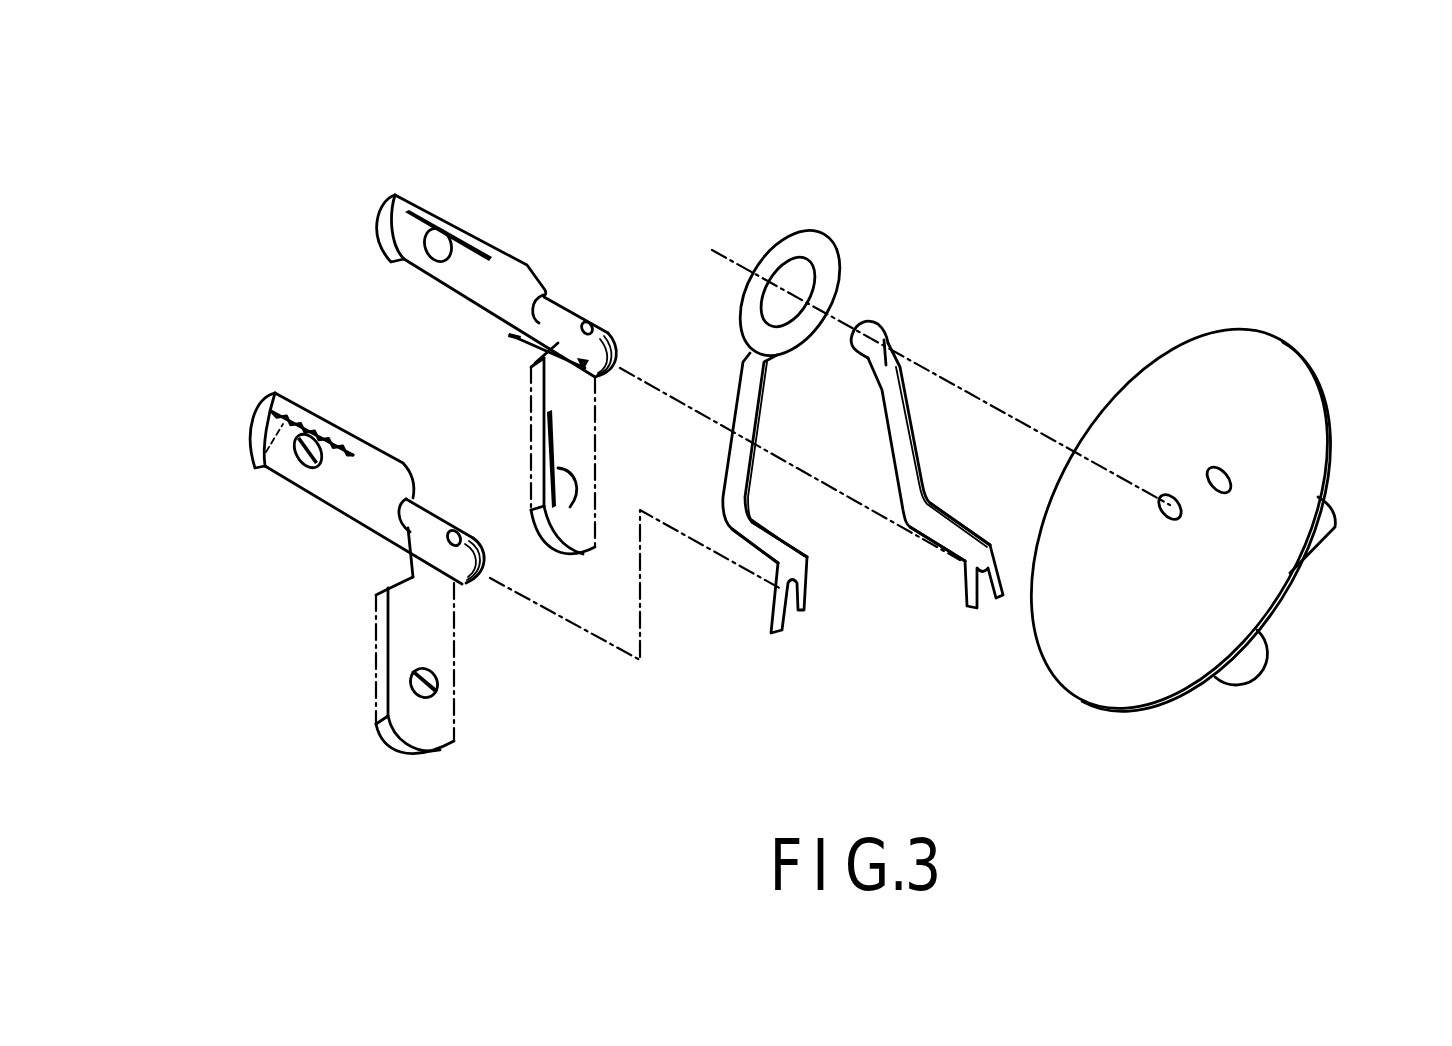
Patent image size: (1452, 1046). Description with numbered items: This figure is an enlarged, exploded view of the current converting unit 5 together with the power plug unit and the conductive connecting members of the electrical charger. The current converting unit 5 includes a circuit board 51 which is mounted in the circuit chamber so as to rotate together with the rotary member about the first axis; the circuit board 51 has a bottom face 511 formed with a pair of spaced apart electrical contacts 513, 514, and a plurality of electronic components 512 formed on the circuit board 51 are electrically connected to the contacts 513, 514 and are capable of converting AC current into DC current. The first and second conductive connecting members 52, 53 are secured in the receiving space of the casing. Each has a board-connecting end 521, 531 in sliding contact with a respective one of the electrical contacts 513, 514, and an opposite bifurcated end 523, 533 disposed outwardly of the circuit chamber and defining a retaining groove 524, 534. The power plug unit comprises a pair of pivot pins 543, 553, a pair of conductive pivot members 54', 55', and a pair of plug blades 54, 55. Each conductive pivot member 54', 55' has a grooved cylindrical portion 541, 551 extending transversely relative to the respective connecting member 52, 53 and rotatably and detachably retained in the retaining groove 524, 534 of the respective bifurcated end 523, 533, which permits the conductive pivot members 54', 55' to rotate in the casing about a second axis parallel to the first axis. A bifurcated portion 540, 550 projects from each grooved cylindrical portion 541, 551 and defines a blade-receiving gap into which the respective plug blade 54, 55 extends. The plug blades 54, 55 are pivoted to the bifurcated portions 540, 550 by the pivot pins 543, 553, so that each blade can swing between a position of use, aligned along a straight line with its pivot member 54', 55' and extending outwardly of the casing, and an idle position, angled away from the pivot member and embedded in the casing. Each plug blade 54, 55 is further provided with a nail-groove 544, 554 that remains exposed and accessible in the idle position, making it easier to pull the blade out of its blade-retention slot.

The current converting unit 5 is at (922, 330).
The circuit board 51 is at (1340, 455).
The bottom face 511 is at (1240, 547).
The electronic components 512 is at (1325, 523).
The electrical contact 513 is at (1165, 521).
The electrical contact 514 is at (1225, 472).
The first conductive connecting member 52 is at (918, 437).
The board-connecting end 521 is at (885, 363).
The bifurcated end 523 is at (993, 543).
The retaining groove 524 is at (987, 600).
The second conductive connecting member 53 is at (738, 392).
The board-connecting end 531 is at (818, 250).
The bifurcated end 533 is at (797, 568).
The retaining groove 534 is at (787, 617).
The plug blade 54 is at (486, 272).
The conductive pivot member 54' is at (563, 331).
The bifurcated portion 540 is at (411, 274).
The grooved cylindrical portion 541 is at (613, 345).
The pivot pin 543 is at (588, 322).
The nail-groove 544 is at (447, 245).
The plug blade 55 is at (356, 459).
The conductive pivot member 55' is at (418, 557).
The bifurcated portion 550 is at (351, 594).
The grooved cylindrical portion 551 is at (482, 574).
The pivot pin 553 is at (459, 531).
The nail-groove 554 is at (254, 466).